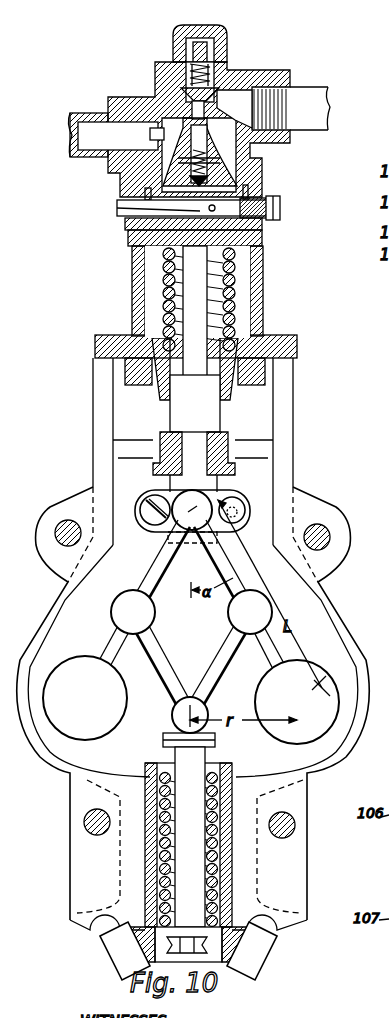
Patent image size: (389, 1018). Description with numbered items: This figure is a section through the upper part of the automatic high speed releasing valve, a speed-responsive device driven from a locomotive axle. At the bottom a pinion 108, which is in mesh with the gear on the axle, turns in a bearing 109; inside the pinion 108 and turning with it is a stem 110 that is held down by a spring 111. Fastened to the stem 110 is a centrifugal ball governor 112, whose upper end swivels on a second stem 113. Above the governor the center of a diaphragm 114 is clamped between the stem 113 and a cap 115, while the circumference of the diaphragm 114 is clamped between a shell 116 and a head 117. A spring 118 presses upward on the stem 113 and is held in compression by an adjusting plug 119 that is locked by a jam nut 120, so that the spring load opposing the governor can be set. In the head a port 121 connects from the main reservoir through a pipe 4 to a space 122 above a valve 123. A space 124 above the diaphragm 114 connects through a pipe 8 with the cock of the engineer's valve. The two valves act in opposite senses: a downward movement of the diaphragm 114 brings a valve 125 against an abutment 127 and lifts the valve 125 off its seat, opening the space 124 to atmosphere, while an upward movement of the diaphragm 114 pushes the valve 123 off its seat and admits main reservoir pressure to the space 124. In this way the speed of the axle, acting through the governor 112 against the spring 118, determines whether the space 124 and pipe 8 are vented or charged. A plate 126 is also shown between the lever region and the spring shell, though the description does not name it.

The pipe 4 is at (317, 100).
The pipe 8 is at (80, 131).
The pinion 108 is at (108, 948).
The bearing 109 is at (130, 860).
The stem 110 is at (157, 832).
The spring 111 is at (147, 795).
The centrifugal ball governor 112 is at (67, 733).
The stem 113 is at (170, 417).
The diaphragm 114 is at (267, 193).
The cap 115 is at (252, 154).
The shell 116 is at (137, 229).
The head 117 is at (120, 181).
The spring 118 is at (160, 285).
The adjusting plug 119 is at (157, 388).
The jam nut 120 is at (127, 364).
The port 121 is at (277, 73).
The space 122 is at (226, 52).
The valve 123 is at (222, 68).
The space 124 is at (277, 140).
The valve 125 is at (252, 182).
The plate 126 is at (130, 221).
The abutment 127 is at (117, 207).